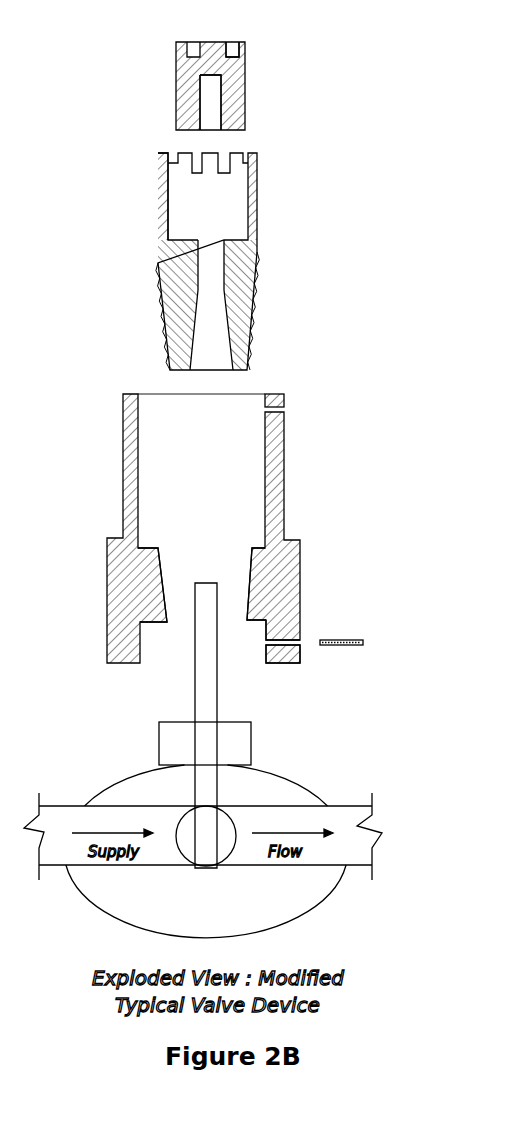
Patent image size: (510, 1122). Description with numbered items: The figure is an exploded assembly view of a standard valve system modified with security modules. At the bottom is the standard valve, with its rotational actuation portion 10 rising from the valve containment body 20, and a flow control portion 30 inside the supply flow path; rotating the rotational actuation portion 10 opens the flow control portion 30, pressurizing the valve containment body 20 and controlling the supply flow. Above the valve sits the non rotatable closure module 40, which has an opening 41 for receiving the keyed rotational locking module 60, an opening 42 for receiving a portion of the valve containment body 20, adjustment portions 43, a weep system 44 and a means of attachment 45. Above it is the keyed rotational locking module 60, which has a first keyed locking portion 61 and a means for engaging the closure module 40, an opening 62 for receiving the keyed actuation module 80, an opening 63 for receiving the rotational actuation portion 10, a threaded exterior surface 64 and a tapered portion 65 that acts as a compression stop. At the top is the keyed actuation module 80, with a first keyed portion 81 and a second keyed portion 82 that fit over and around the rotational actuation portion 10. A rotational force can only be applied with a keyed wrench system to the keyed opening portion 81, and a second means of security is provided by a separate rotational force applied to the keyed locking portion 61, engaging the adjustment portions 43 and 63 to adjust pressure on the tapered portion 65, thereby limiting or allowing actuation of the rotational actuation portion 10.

The rotational actuation portion 10 is at (208, 777).
The valve containment body 20 is at (182, 756).
The flow control portion 30 is at (188, 842).
The non rotatable closure module 40 is at (280, 465).
The opening for receiving the keyed rotational locking module 41 is at (252, 510).
The opening for receiving a portion of the valve containment body 42 is at (257, 628).
The adjustment portion 43 is at (257, 582).
The weep system 44 is at (284, 409).
The means of attachment 45 is at (363, 642).
The keyed rotational locking module 60 is at (257, 253).
The keyed locking portion 61 is at (158, 162).
The opening for receiving the keyed actuation module 62 is at (235, 192).
The opening for receiving the rotational actuation portion 63 is at (217, 273).
The threads 64 is at (256, 302).
The tapered portion 65 is at (250, 332).
The keyed actuation module 80 is at (233, 82).
The first keyed portion 81 is at (233, 52).
The second keyed portion 82 is at (212, 112).